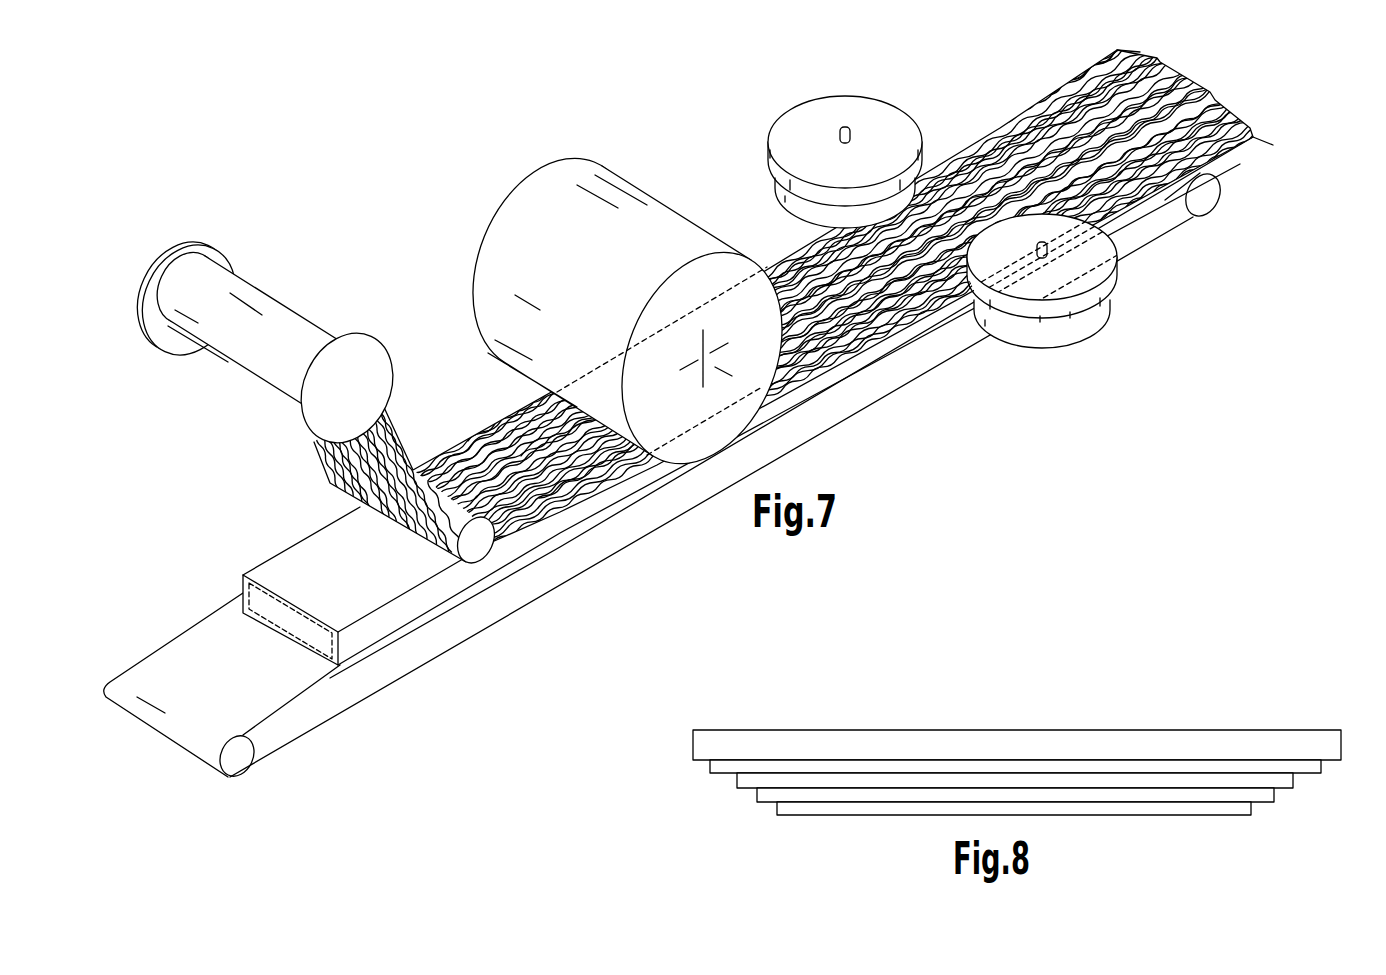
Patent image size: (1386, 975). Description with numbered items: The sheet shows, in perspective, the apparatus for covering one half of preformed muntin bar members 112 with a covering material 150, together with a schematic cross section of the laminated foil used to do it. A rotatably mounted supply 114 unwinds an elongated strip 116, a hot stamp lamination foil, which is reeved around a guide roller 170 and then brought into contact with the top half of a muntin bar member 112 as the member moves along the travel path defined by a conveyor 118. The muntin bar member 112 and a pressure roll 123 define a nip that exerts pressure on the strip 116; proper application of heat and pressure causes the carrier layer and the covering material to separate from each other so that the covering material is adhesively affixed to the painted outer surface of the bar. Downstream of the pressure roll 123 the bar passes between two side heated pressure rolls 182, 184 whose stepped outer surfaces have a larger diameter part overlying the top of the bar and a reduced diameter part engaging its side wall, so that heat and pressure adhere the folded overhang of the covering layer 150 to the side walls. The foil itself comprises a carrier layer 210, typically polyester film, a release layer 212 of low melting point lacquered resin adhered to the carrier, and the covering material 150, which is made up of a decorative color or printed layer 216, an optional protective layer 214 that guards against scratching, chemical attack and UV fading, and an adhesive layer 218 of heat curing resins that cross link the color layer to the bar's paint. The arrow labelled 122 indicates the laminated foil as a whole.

In FIG. 7, the muntin bar member 112 is at (357, 592).
In FIG. 7, the supply 114 is at (284, 340).
In FIG. 7, the elongated strip 116 is at (397, 427).
In FIG. 7, the conveyor 118 is at (253, 693).
In FIG. 7, the pressure roll 123 is at (550, 223).
In FIG. 7, the guide roller 170 is at (478, 544).
In FIG. 7, the side heated pressure roll 182 is at (1077, 268).
In FIG. 7, the side heated pressure roll 184 is at (807, 125).
In FIG. 8, the laminate 122 is at (994, 756).
In FIG. 8, the covering material 150 is at (994, 776).
In FIG. 8, the carrier layer 210 is at (783, 743).
In FIG. 8, the release layer 212 is at (1323, 772).
In FIG. 8, the protective layer 214 is at (737, 783).
In FIG. 8, the decorative color layer 216 is at (753, 799).
In FIG. 8, the adhesive layer 218 is at (837, 818).